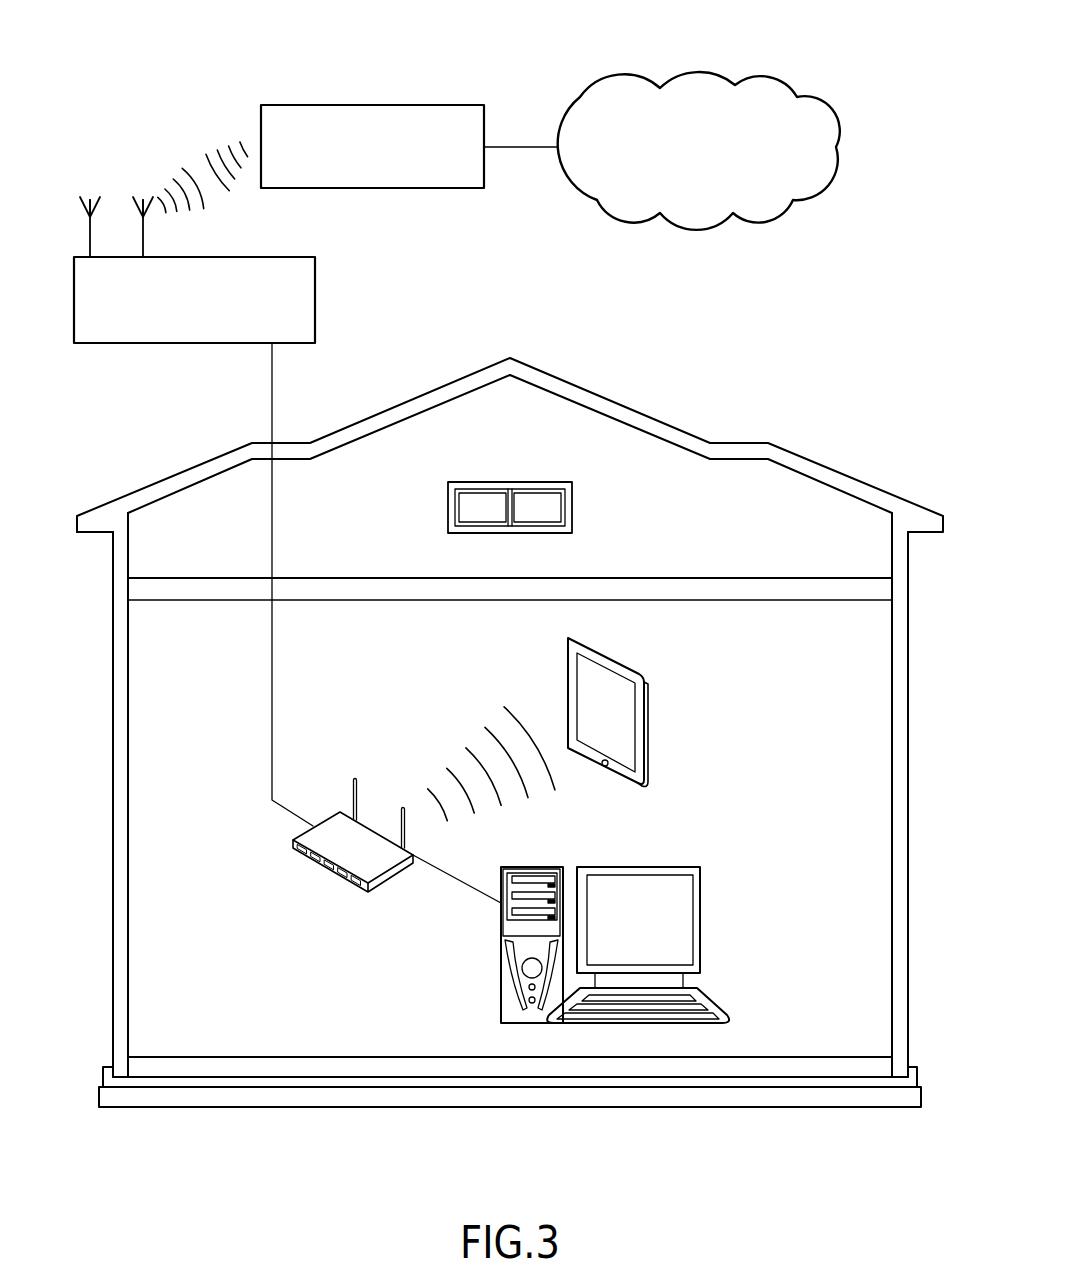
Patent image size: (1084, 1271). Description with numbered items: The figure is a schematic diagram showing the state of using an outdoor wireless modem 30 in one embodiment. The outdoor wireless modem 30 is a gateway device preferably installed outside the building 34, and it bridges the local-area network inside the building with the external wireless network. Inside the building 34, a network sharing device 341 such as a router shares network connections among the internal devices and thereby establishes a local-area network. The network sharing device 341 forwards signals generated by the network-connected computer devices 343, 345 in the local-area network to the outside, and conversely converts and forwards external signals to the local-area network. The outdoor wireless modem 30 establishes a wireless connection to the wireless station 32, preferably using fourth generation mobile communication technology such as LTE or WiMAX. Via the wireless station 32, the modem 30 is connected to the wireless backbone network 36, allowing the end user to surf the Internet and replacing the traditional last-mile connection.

The outdoor wireless modem 30 is at (315, 297).
The wireless station 32 is at (373, 105).
The building 34 is at (612, 398).
The wireless backbone network 36 is at (765, 78).
The network sharing device 341 is at (335, 876).
The network-connected computer device 343 is at (568, 665).
The network-connected computer device 345 is at (678, 865).